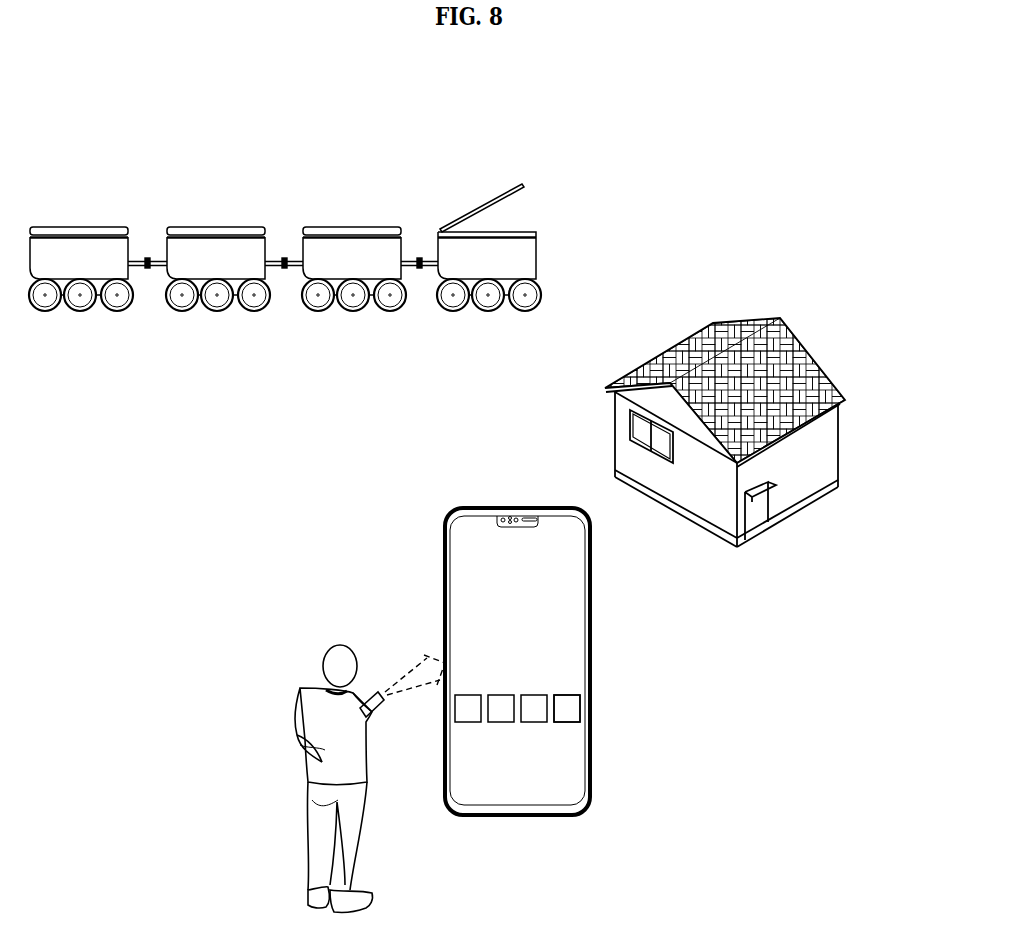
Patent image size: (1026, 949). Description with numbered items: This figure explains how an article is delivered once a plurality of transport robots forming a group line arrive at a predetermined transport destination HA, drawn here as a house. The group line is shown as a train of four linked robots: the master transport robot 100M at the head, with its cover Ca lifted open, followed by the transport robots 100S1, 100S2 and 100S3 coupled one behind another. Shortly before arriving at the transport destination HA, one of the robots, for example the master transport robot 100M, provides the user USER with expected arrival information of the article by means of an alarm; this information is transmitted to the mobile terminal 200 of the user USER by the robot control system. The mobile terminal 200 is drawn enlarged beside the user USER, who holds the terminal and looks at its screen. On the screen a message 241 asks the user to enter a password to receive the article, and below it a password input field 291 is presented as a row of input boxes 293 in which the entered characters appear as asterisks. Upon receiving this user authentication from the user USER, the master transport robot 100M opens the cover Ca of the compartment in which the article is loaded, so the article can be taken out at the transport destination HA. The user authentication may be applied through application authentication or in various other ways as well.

The master transport robot 100M is at (489, 257).
The slave transport robot 100S1 is at (350, 301).
The slave transport robot 100S2 is at (212, 301).
The slave transport robot 100S3 is at (78, 301).
The cover Ca is at (480, 202).
The transport destination HA is at (828, 443).
The mobile terminal 200 is at (525, 626).
The display message 241 is at (470, 540).
The password input field 291 is at (460, 573).
The password input box 293 is at (580, 706).
The user USER is at (308, 755).